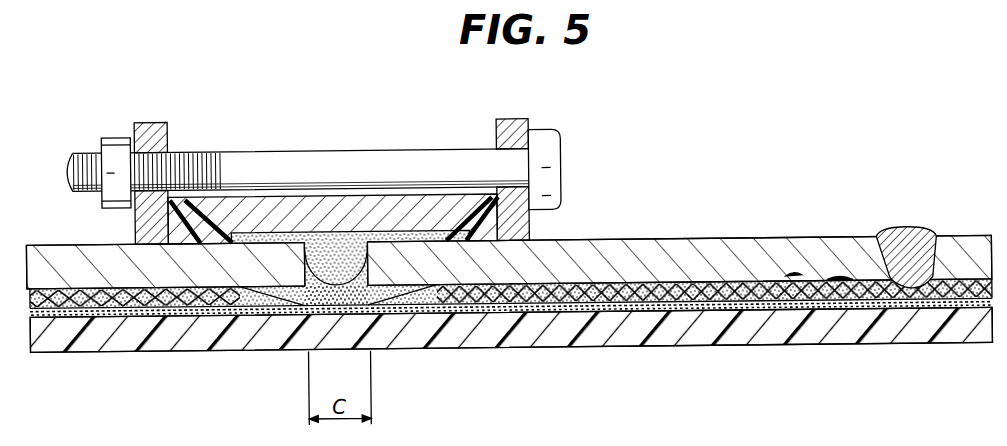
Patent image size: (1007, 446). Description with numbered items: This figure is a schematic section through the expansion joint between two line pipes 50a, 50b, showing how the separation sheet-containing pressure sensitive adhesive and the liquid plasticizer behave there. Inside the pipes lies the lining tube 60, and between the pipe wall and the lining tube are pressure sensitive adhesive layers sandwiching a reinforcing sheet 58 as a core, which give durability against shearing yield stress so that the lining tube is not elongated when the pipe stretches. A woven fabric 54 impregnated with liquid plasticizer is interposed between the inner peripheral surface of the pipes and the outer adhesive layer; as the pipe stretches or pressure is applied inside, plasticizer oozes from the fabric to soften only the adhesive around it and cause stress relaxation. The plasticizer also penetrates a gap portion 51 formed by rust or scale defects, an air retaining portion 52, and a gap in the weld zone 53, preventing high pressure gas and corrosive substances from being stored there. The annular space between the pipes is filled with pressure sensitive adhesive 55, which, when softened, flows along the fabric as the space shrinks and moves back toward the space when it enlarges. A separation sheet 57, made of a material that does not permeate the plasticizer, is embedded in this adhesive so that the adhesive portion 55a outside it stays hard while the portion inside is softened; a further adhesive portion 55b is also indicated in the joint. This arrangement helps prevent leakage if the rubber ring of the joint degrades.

The line pipe 50a is at (100, 246).
The line pipe 50b is at (637, 253).
The gap portion 51 is at (838, 283).
The air retaining portion 52 is at (733, 282).
The weld zone 53 is at (905, 242).
The woven fabric 54 is at (123, 301).
The pressure sensitive adhesive 55 is at (344, 299).
The pressure sensitive adhesive portion 55a is at (345, 252).
The sealer layer 55b is at (627, 306).
The separation sheet 57 is at (323, 233).
The reinforcing sheet 58 is at (535, 303).
The lining tube 60 is at (823, 336).